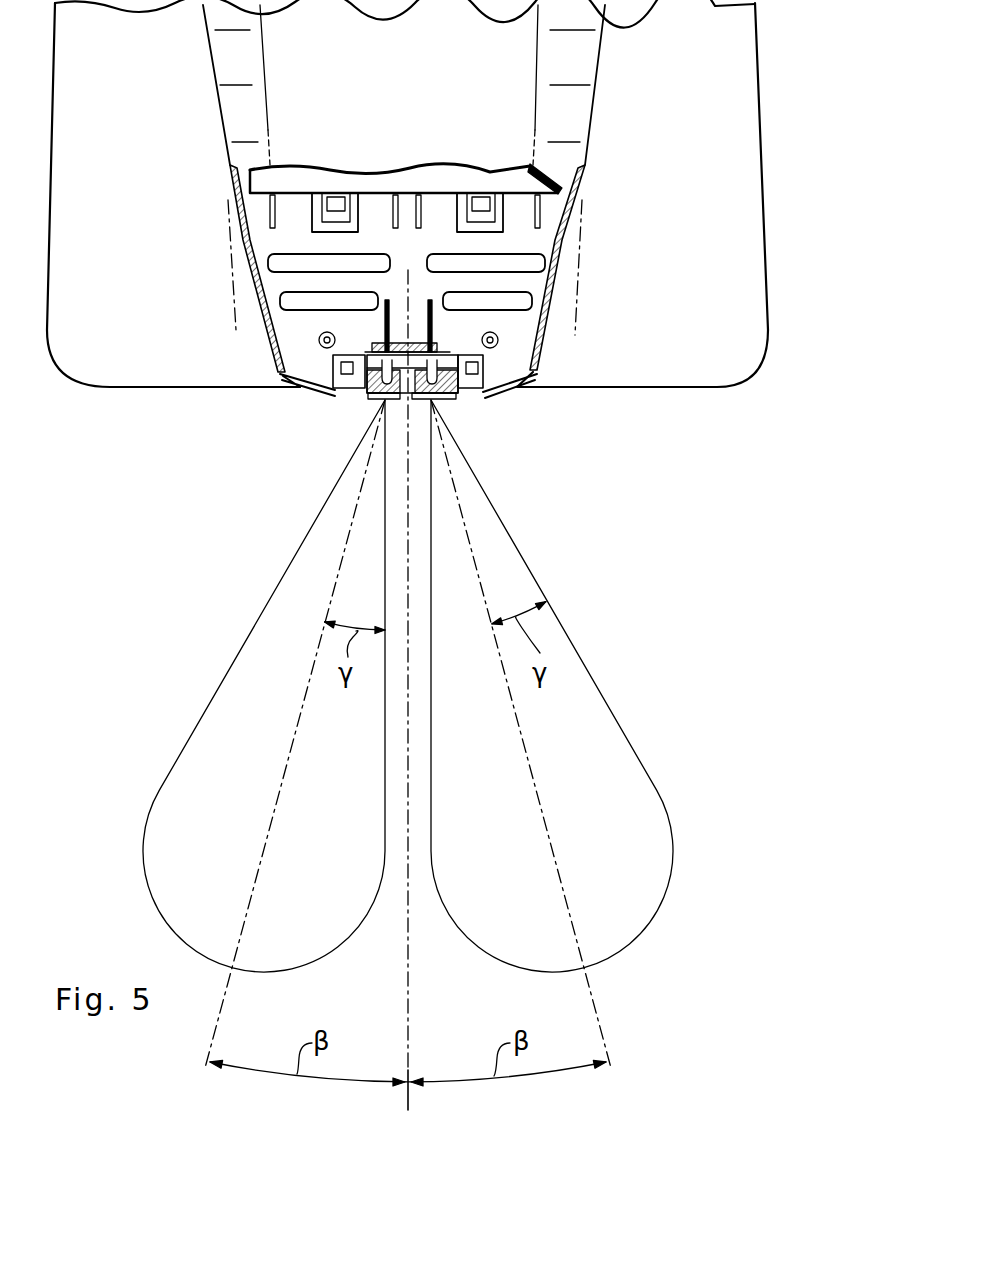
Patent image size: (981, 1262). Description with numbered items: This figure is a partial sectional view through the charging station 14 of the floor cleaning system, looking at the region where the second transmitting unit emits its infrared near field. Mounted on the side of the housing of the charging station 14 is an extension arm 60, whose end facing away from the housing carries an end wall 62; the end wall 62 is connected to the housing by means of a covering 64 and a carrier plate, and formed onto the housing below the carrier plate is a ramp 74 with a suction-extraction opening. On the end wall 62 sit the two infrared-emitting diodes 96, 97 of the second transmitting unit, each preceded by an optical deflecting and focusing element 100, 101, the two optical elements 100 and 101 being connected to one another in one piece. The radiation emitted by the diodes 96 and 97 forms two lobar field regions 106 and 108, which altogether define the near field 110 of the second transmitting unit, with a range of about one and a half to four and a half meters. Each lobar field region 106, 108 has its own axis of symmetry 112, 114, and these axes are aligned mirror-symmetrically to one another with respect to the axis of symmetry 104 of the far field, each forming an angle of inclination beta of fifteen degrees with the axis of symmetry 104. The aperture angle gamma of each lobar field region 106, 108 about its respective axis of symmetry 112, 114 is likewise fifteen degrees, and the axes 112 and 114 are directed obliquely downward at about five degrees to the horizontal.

The charging station 14 is at (712, 400).
The extension arm 60 is at (510, 52).
The end wall 62 is at (485, 397).
The covering 64 is at (490, 115).
The ramp 74 is at (632, 357).
The infrared-emitting diode 96 is at (386, 350).
The infrared-emitting diode 97 is at (432, 350).
The optical deflecting and focusing element 100 is at (378, 402).
The optical deflecting and focusing element 101 is at (440, 402).
The axis of symmetry 104 is at (408, 1100).
The lobar field region 106 is at (199, 722).
The lobar field region 108 is at (623, 733).
The near field 110 is at (638, 962).
The axis of symmetry 112 is at (205, 1038).
The axis of symmetry 114 is at (608, 1047).